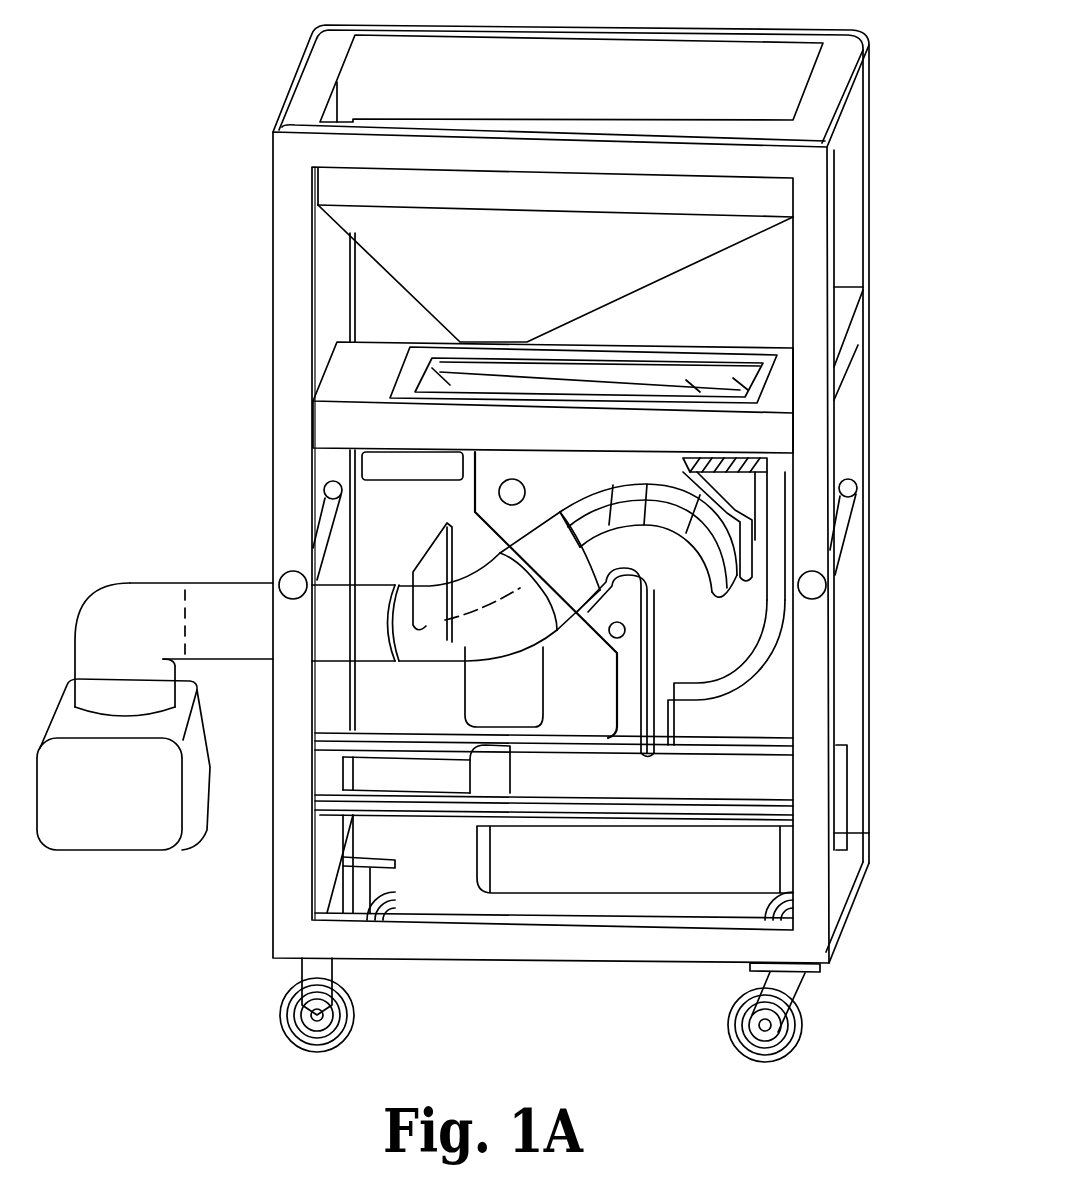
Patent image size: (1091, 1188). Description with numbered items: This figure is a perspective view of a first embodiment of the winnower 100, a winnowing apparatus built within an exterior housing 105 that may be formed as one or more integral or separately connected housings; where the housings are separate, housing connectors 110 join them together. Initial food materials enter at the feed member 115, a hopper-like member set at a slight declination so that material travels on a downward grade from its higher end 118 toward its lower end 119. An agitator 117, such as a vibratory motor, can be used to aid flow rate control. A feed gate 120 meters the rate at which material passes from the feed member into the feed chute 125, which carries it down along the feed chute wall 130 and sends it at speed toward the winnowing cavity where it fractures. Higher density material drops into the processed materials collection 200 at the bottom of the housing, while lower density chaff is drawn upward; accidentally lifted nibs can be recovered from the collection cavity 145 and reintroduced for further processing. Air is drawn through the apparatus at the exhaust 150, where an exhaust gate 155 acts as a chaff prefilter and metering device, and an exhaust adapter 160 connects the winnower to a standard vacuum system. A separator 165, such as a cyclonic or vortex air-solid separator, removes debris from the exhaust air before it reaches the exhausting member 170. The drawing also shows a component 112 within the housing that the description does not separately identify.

The winnower 100 is at (908, 160).
The exterior housing 105 is at (863, 227).
The housing connector 110 is at (287, 584).
The hopper 112 is at (473, 263).
The feed member 115 is at (540, 384).
The agitator 117 is at (396, 475).
The higher end 118 is at (467, 382).
The lower end 119 is at (693, 387).
The feed gate 120 is at (740, 385).
The feed chute 125 is at (750, 487).
The feed chute wall 130 is at (740, 685).
The collection cavity 145 is at (486, 706).
The exhaust 150 is at (437, 652).
The exhaust gate 155 is at (442, 556).
The exhaust adapter 160 is at (385, 590).
The separator 165 is at (208, 630).
The exhausting member 170 is at (91, 813).
The processed materials collection 200 is at (618, 868).